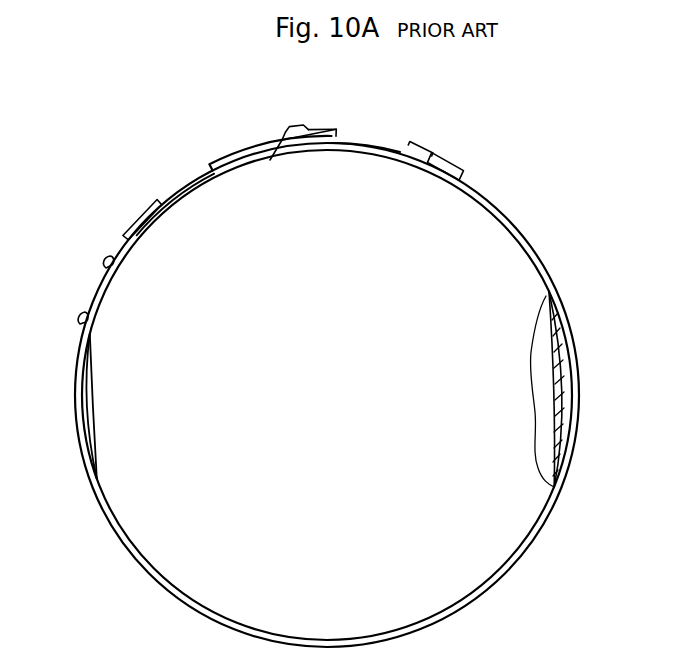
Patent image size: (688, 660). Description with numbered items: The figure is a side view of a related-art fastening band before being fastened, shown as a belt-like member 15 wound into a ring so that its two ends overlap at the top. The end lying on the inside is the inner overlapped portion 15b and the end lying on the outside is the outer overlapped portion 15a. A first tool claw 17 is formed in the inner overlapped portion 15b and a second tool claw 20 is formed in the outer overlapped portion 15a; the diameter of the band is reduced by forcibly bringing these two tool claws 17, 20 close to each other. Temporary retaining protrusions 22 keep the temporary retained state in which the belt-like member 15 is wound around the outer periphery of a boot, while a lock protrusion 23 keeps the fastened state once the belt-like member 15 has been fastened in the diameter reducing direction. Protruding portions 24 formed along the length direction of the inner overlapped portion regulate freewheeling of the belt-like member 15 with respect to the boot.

The belt-like member 15 is at (518, 229).
The outer overlapped portion 15a is at (239, 158).
The inner overlapped portion 15b is at (353, 160).
The first tool claw 17 is at (443, 164).
The second tool claw 20 is at (290, 131).
The temporary retaining protrusions 22 is at (150, 220).
The lock protrusion 23 is at (82, 318).
The protruding portions 24 is at (100, 398).